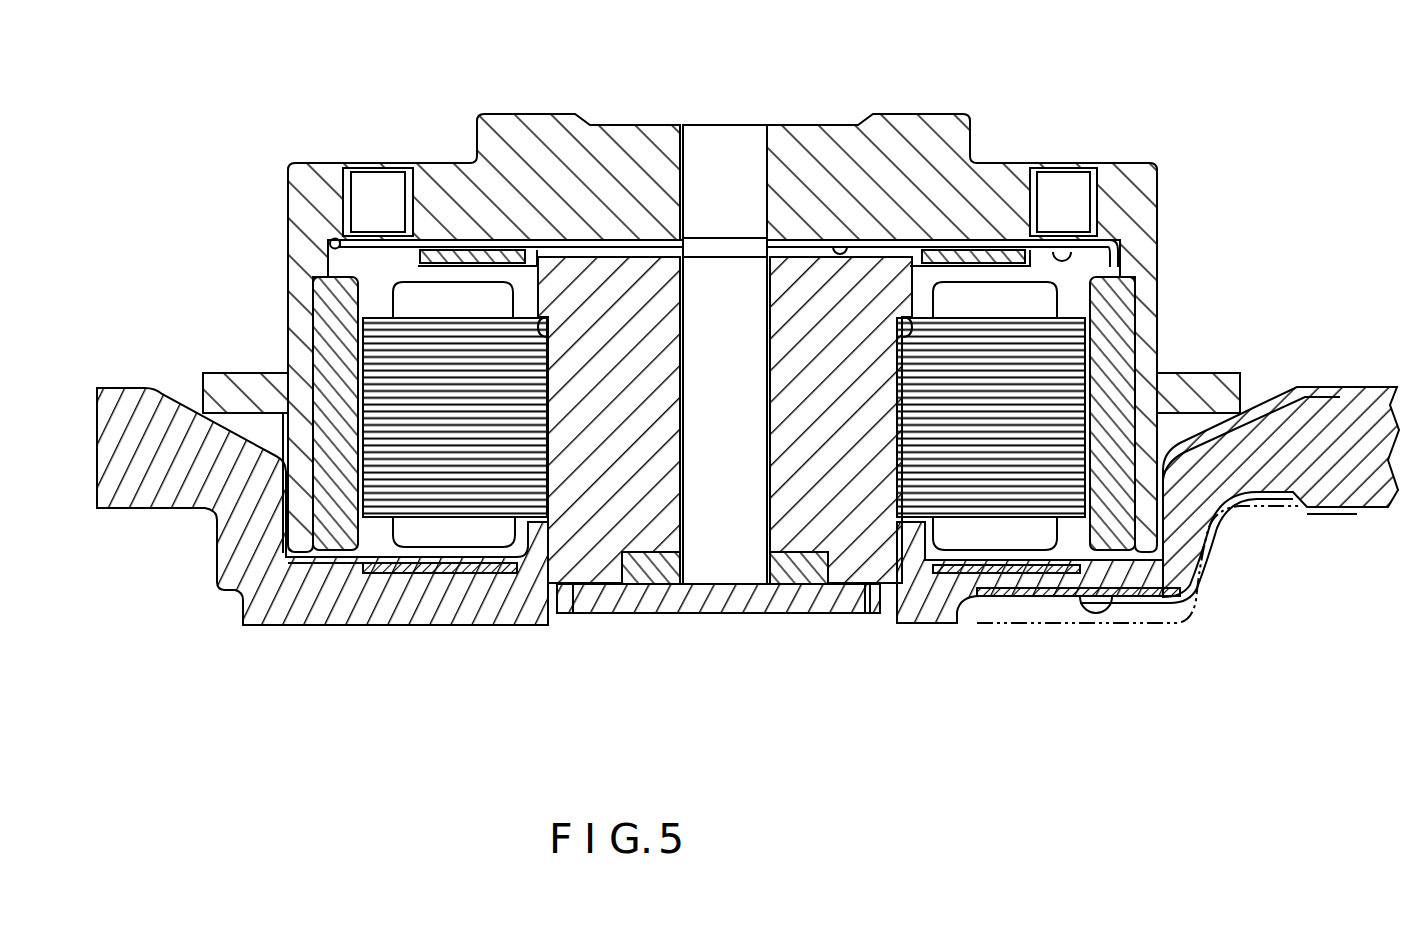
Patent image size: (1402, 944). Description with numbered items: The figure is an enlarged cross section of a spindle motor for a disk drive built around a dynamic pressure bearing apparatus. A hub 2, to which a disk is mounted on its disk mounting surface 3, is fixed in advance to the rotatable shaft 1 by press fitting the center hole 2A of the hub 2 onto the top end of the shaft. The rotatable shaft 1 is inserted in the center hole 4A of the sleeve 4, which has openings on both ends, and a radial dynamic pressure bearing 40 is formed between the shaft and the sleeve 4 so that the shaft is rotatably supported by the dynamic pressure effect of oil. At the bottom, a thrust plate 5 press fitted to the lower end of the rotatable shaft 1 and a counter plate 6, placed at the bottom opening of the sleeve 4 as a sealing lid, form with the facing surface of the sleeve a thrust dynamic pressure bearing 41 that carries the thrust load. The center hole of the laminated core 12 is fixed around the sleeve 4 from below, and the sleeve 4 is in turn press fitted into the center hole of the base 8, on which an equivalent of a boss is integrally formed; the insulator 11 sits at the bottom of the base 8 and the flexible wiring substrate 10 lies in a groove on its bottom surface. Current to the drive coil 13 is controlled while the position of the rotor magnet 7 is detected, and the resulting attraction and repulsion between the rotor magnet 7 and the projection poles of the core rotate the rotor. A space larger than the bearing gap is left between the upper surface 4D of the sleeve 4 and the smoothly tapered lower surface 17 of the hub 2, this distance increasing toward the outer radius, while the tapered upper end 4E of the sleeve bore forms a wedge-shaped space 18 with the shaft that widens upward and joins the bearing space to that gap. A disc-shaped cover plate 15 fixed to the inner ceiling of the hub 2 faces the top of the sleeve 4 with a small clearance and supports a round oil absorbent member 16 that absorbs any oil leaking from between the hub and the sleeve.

The rotatable shaft 1 is at (692, 182).
The hub 2 is at (940, 148).
The center hole of hub 2A is at (768, 245).
The disk mounting surface 3 is at (1217, 372).
The sleeve 4 is at (583, 283).
The center hole of sleeve 4A is at (750, 512).
The upper surface of sleeve 4D is at (822, 255).
The upper end of sleeve center hole 4E is at (708, 248).
The thrust plate 5 is at (785, 600).
The counter plate 6 is at (830, 606).
The rotor magnet 7 is at (1115, 298).
The base 8 is at (1340, 395).
The flexible wiring substrate 10 is at (1340, 510).
The insulator 11 is at (465, 577).
The laminated core 12 is at (1063, 360).
The drive coil 13 is at (1042, 303).
The cover plate 15 is at (1078, 247).
The oil absorbent member 16 is at (968, 252).
The lower surface of hub 17 is at (838, 248).
The space 18 is at (773, 238).
The radial dynamic pressure bearing 40 is at (677, 340).
The thrust dynamic pressure bearing 41 is at (655, 580).